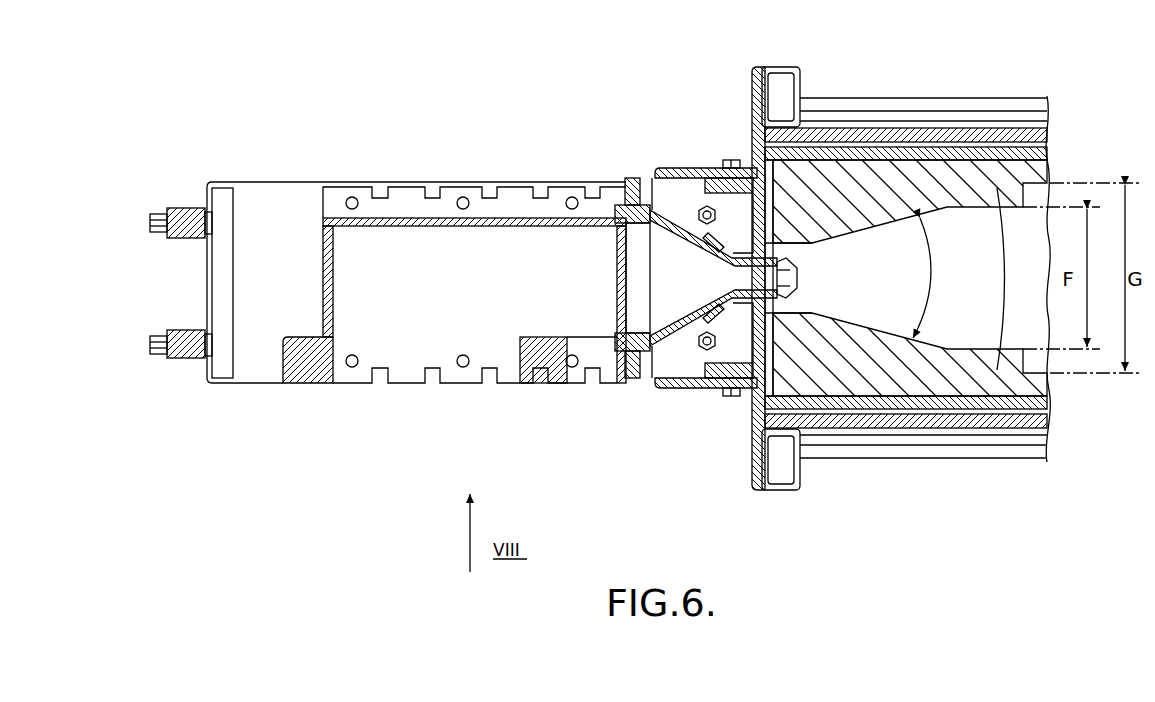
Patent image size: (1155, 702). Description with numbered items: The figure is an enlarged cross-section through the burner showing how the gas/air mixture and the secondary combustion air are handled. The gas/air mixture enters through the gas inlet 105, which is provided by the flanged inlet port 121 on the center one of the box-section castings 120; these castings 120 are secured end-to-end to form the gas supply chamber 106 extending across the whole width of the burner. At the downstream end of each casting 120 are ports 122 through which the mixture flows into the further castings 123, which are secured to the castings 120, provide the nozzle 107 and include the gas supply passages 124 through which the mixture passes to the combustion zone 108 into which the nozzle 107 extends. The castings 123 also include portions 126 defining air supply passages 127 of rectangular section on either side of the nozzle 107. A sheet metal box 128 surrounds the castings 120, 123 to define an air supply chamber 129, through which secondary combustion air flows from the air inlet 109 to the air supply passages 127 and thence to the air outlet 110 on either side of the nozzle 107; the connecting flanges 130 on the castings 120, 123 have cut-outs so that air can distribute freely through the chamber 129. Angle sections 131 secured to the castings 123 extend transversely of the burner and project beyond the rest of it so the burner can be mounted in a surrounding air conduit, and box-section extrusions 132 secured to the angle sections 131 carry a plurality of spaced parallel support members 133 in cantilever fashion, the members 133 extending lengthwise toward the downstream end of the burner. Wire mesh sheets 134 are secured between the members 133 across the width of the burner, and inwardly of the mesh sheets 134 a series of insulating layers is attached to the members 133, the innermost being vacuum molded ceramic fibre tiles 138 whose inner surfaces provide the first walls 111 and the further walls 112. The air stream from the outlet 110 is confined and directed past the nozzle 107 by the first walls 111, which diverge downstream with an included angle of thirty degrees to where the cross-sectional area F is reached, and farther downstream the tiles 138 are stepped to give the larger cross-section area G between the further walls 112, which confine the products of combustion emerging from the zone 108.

The gas inlet 105 is at (403, 360).
The gas supply chamber 106 is at (454, 281).
The nozzle 107 is at (803, 276).
The combustion zone 108 is at (882, 313).
The air inlet 109 is at (187, 280).
The air outlet 110 is at (770, 257).
The first walls 111 is at (930, 278).
The further walls 112 is at (1042, 181).
The box-section castings 120 is at (394, 218).
The flanged inlet port 121 is at (316, 358).
The ports 122 is at (622, 277).
The further castings 123 is at (653, 178).
The gas supply passages 124 is at (775, 318).
The portions 126 is at (714, 245).
The air supply passages 127 is at (742, 258).
The sheet metal box 128 is at (273, 182).
The air supply chamber 129 is at (256, 347).
The connecting flanges 130 is at (519, 200).
The angle sections 131 is at (753, 70).
The box-section extrusions 132 is at (783, 68).
The support members 133 is at (910, 110).
The wire mesh sheets 134 is at (1020, 120).
The ceramic fibre tiles 138 is at (998, 279).